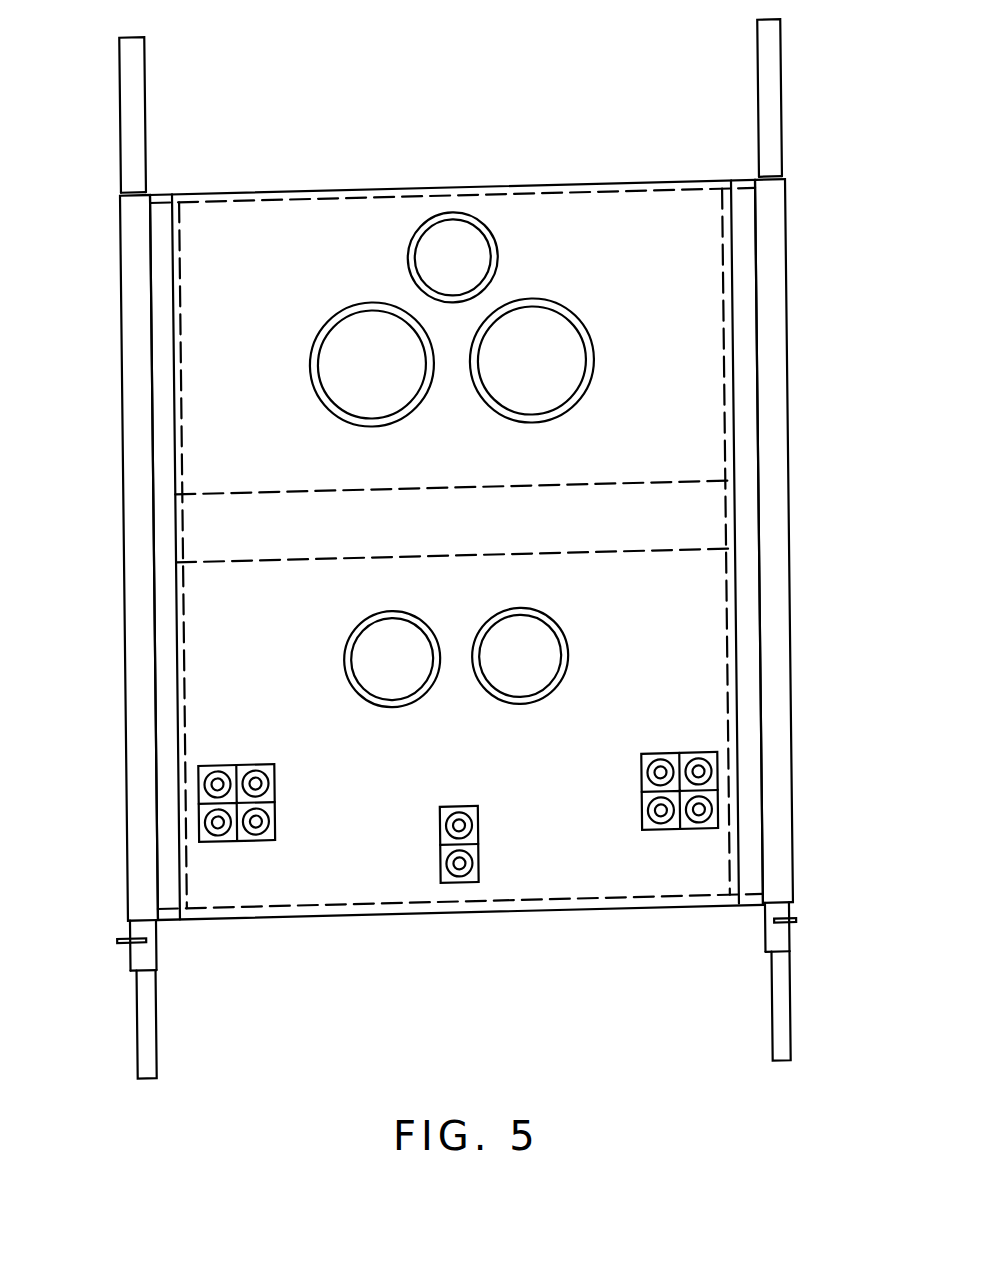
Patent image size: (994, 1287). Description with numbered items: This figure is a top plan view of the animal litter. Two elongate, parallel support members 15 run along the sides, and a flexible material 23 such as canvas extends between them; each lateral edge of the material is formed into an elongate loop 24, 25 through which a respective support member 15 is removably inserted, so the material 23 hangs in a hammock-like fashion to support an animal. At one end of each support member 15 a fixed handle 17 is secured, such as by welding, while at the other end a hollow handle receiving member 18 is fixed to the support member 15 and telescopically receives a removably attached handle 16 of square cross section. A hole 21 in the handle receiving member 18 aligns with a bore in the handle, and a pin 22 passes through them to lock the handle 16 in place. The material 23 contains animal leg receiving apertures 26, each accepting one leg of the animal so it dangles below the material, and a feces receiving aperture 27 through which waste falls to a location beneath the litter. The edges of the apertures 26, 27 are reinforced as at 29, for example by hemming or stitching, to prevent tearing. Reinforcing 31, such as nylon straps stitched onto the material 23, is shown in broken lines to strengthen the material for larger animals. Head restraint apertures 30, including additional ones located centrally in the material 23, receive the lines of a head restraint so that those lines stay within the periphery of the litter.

The support member 15 is at (144, 193).
The removably attached handle 16 is at (148, 1050).
The fixed handle 17 is at (143, 97).
The handle receiving member 18 is at (152, 967).
The hole 21 is at (150, 940).
The pin 22 is at (122, 940).
The flexible material 23 is at (703, 602).
The loop 24 is at (165, 372).
The loop 25 is at (745, 300).
The animal leg receiving aperture 26 is at (352, 314).
The feces receiving aperture 27 is at (480, 275).
The reinforcing 29 is at (493, 247).
The head restraint aperture 30 is at (270, 795).
The reinforcing 31 is at (525, 193).